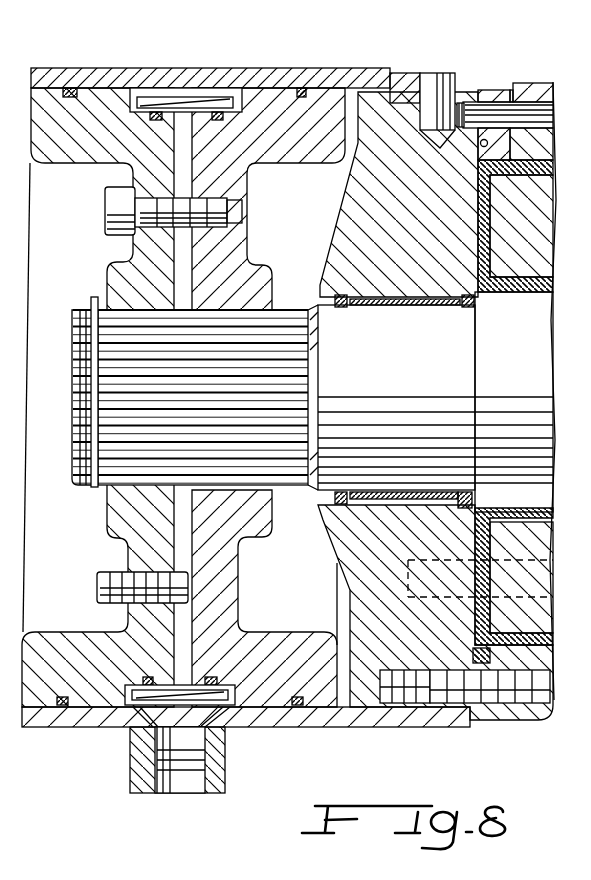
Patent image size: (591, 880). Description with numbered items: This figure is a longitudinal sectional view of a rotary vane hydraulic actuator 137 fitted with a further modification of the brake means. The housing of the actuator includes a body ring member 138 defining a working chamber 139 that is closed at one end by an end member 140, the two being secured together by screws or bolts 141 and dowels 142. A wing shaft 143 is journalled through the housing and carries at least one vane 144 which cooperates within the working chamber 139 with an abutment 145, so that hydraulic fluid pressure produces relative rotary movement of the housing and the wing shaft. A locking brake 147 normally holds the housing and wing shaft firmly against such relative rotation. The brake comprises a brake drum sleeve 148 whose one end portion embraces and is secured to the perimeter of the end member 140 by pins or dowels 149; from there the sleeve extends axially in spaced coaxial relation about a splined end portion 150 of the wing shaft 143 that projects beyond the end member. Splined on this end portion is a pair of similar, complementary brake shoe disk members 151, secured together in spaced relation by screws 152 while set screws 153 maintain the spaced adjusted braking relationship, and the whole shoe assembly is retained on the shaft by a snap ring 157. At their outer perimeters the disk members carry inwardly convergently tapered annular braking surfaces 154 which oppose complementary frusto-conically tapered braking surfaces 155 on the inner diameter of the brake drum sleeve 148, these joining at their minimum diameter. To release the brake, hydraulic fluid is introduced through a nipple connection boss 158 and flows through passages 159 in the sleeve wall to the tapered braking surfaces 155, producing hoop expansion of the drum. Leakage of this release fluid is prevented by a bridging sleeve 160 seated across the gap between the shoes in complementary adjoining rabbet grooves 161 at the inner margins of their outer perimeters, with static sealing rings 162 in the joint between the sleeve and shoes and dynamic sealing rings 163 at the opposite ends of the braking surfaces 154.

The rotary vane hydraulic actuator 137 is at (492, 67).
The body ring member 138 is at (543, 92).
The working chamber 139 is at (530, 165).
The end member 140 is at (480, 97).
The screws or bolts 141 is at (507, 710).
The dowels 142 is at (518, 110).
The wing shaft 143 is at (528, 373).
The vane 144 is at (533, 262).
The abutment 145 is at (553, 700).
The locking brake 147 is at (331, 64).
The brake drum sleeve 148 is at (352, 78).
The pins or dowels 149 is at (428, 88).
The splined end portion 150 is at (213, 388).
The brake shoe disk members 151 is at (183, 397).
The screws 152 is at (123, 210).
The set screws 153 is at (108, 578).
The annular braking surfaces 154 is at (97, 88).
The tapered braking surfaces 155 is at (138, 88).
The snap ring 157 is at (93, 300).
The nipple connection boss 158 is at (148, 772).
The passages 159 is at (127, 728).
The bridging sleeve 160 is at (182, 683).
The rabbet grooves 161 is at (90, 650).
The static sealing rings 162 is at (215, 112).
The dynamic sealing rings 163 is at (297, 697).